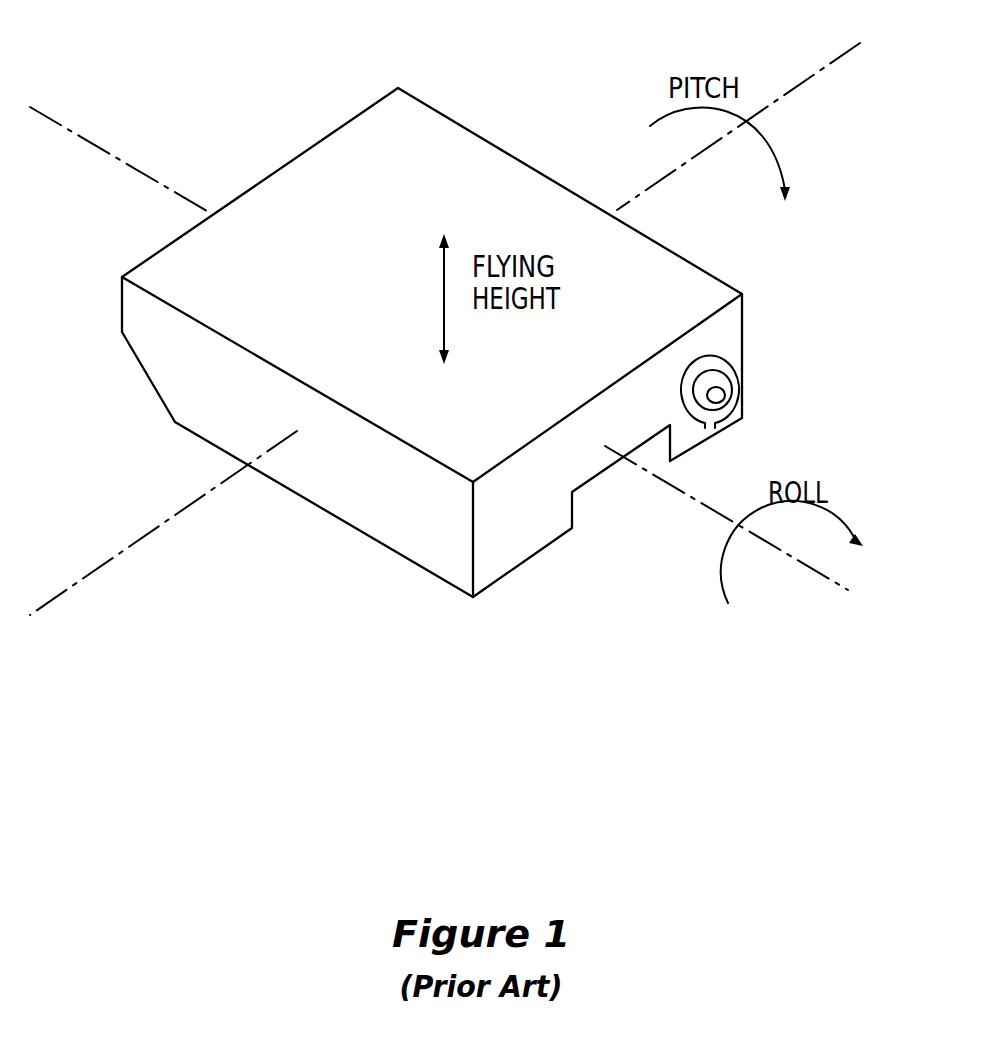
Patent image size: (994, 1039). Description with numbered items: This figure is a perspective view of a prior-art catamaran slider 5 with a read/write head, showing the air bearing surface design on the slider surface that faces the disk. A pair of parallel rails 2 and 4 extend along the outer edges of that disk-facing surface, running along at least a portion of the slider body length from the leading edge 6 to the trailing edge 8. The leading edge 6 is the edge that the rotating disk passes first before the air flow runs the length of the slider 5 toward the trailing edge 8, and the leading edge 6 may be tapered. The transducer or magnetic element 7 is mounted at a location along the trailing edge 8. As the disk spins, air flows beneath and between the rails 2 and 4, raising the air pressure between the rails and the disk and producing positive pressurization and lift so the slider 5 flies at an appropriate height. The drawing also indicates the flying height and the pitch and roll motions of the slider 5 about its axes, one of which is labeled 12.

The rail 2 is at (698, 444).
The rail 4 is at (513, 569).
The catamaran slider 5 is at (430, 330).
The leading edge 6 is at (121, 300).
The transducer or magnetic element 7 is at (733, 368).
The trailing edge 8 is at (745, 304).
The longitudinal axis 12 is at (45, 110).